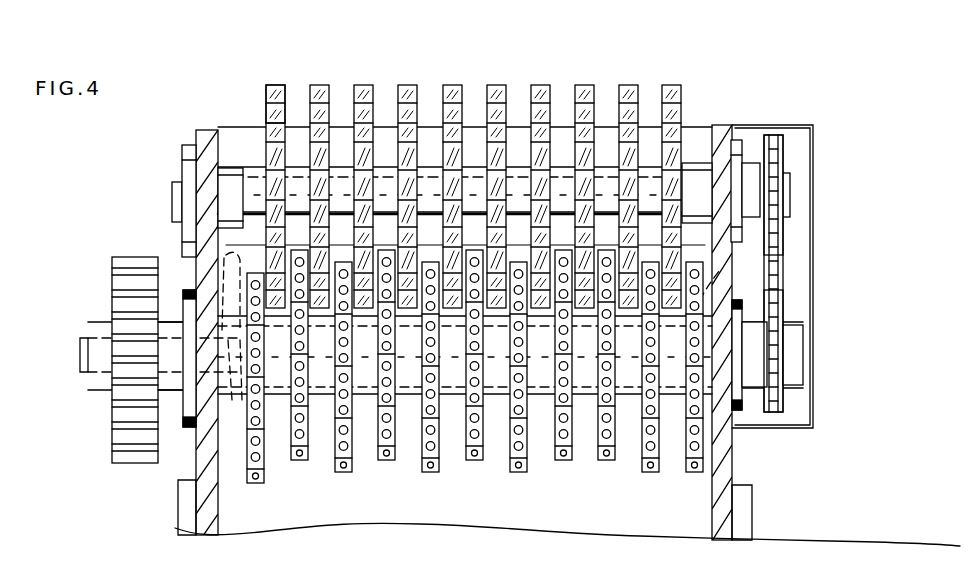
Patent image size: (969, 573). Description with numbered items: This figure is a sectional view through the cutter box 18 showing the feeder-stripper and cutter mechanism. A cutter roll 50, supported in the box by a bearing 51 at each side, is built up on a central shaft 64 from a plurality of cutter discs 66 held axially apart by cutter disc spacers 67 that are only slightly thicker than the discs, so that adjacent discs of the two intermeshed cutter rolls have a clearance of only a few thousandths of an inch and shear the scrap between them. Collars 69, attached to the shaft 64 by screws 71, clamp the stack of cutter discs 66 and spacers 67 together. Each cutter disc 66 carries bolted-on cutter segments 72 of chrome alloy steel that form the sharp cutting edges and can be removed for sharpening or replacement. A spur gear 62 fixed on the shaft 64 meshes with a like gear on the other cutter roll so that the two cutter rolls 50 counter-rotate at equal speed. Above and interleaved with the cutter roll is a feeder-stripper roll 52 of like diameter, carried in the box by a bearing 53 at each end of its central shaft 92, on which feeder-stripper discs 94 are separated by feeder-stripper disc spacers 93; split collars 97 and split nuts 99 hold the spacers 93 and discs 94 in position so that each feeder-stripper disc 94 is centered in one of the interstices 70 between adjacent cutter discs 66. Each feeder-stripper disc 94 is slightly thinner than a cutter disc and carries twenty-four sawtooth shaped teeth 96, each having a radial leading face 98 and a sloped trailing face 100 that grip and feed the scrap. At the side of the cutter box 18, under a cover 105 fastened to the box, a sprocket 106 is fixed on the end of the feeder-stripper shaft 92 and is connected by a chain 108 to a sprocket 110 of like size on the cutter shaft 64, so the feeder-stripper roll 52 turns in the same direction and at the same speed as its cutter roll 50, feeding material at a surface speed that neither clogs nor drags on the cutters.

The cutter box 18 is at (195, 490).
The cutter roll 50 is at (426, 467).
The bearing 51 is at (186, 412).
The feeder-stripper roll 52 is at (258, 87).
The bearing flange 53 is at (182, 160).
The spur gear 62 is at (120, 412).
The central shaft 64 is at (82, 355).
The cutter disc 66 is at (292, 440).
The cutter disc spacer 67 is at (512, 396).
The collar 69 is at (228, 335).
The interstice 70 is at (364, 437).
The screw 71 is at (703, 318).
The cutter segment 72 is at (292, 325).
The central shaft 92 is at (172, 203).
The feeder-stripper disc spacer 93 is at (341, 186).
The feeder-stripper disc 94 is at (284, 117).
The sawtooth shaped tooth 96 is at (372, 90).
The split collar 97 is at (692, 168).
The leading face 98 is at (283, 86).
The split nut 99 is at (232, 178).
The sloped trailing face 100 is at (266, 115).
The cover 105 is at (813, 162).
The sprocket 106 is at (773, 140).
The chain 108 is at (772, 252).
The sprocket 110 is at (780, 405).